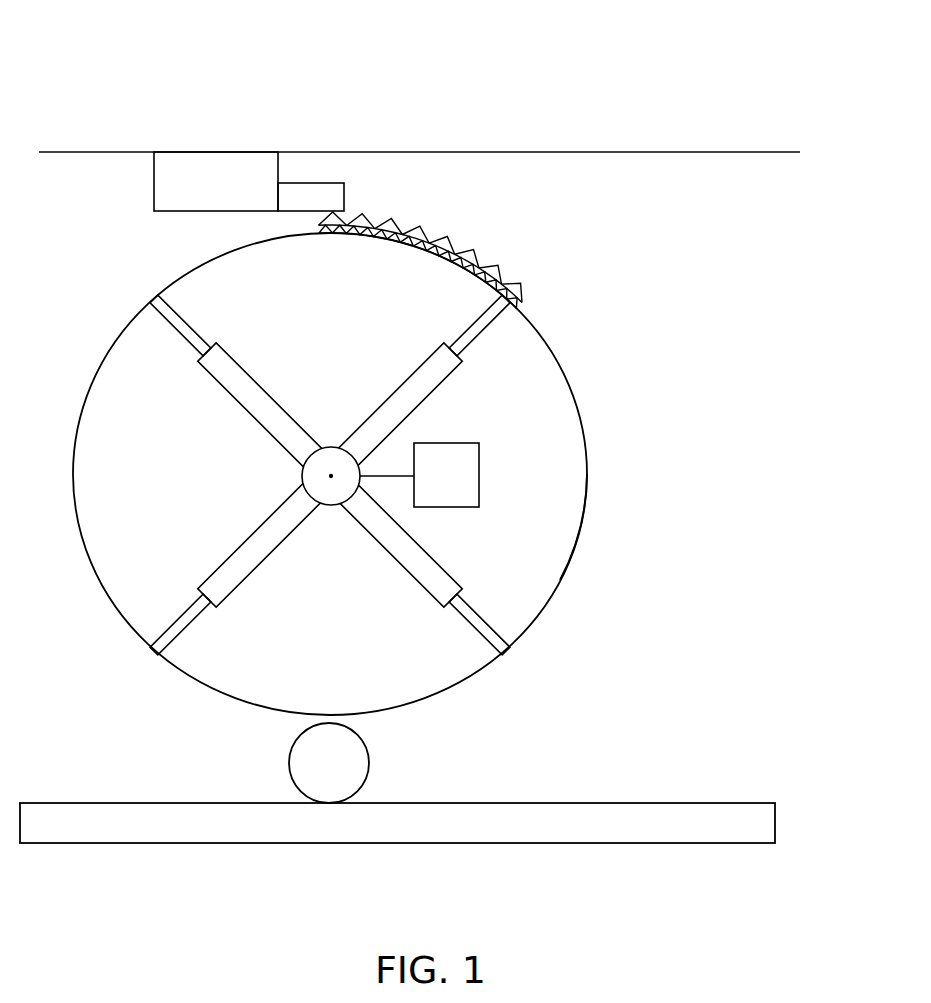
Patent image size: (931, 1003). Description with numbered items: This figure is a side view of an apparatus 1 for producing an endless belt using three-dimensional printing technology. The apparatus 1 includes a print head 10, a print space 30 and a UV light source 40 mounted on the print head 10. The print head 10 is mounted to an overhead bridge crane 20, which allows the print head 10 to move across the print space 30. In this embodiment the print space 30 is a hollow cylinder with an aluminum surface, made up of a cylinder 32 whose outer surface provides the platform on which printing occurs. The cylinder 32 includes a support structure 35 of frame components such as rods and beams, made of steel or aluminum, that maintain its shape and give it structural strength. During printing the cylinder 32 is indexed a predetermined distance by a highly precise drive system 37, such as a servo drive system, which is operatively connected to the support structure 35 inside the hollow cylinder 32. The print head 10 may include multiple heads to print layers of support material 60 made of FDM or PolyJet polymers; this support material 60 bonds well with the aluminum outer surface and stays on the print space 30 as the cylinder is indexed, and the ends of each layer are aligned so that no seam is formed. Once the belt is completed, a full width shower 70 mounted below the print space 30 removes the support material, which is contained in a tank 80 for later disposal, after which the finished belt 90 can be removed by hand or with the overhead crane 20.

The apparatus 1 is at (183, 97).
The print head 10 is at (154, 181).
The overhead bridge crane 20 is at (771, 153).
The print space 30 is at (587, 440).
The cylinder 32 is at (578, 540).
The support structure 35 is at (333, 506).
The drive system 37 is at (479, 474).
The UV light source 40 is at (344, 198).
The support material 60 is at (516, 312).
The full width shower 70 is at (370, 765).
The tank 80 is at (775, 815).
The finished belt 90 is at (519, 300).